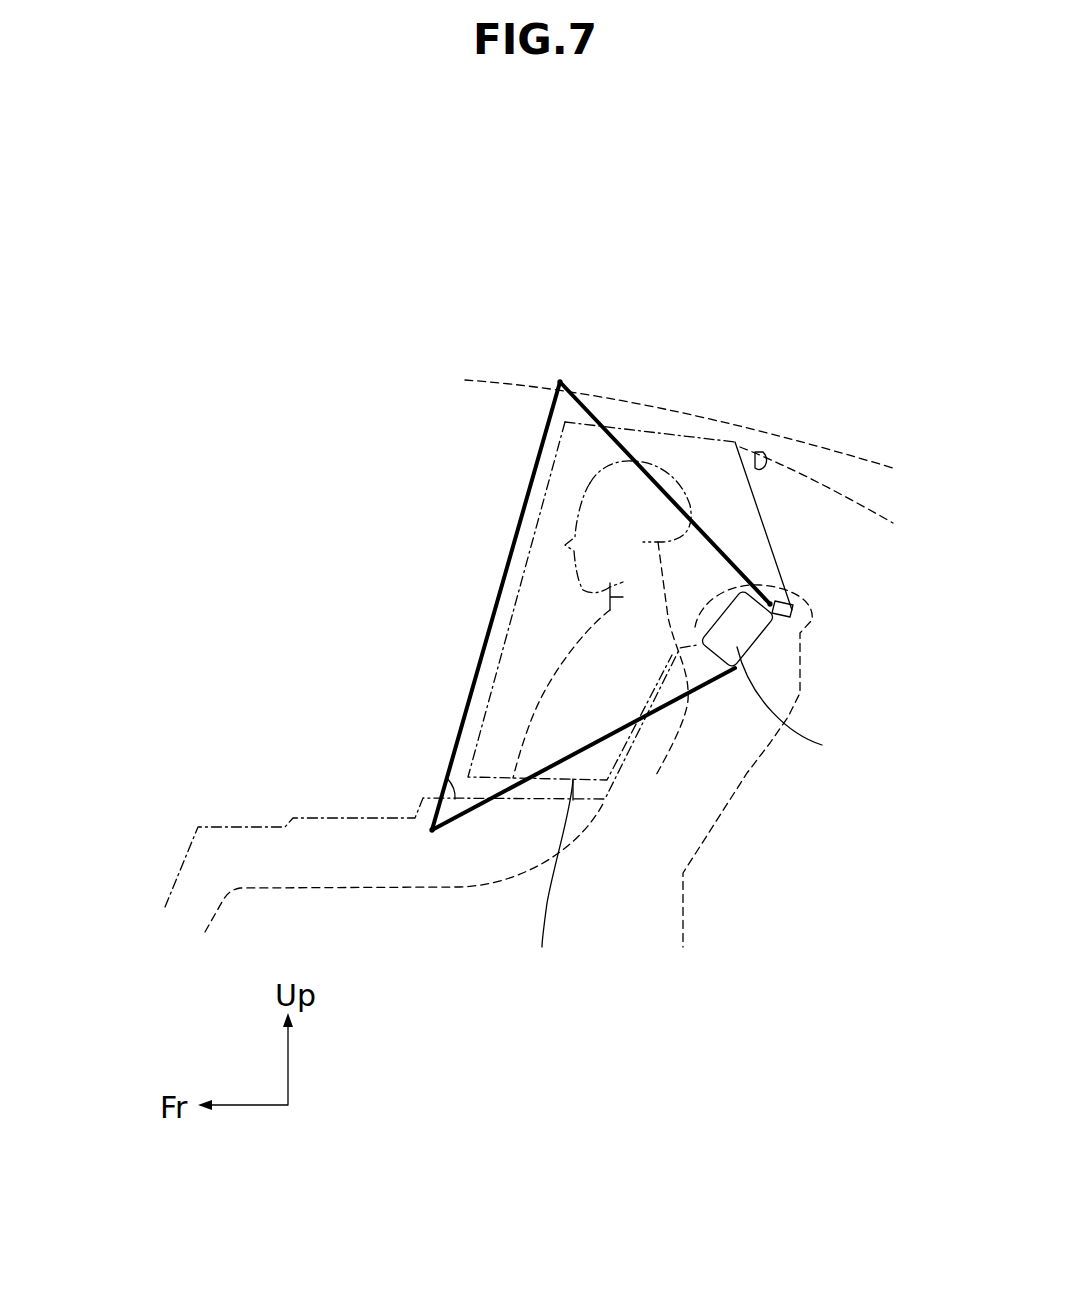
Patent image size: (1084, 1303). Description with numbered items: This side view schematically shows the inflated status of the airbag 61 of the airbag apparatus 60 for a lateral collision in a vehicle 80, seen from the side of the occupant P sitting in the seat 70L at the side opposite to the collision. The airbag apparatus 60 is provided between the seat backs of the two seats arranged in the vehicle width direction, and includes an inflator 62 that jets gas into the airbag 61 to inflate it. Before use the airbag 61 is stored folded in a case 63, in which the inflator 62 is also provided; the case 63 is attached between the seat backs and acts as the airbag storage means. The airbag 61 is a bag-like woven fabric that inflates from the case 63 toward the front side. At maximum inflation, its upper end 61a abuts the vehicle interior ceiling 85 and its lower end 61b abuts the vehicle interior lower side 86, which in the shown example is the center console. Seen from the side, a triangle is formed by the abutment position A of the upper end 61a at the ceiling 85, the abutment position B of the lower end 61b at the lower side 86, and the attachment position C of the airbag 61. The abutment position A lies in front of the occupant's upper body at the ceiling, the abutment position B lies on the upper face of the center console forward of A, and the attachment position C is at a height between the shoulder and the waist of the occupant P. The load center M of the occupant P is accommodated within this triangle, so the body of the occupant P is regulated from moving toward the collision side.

The airbag apparatus 60 is at (751, 647).
The airbag 61 is at (756, 502).
The upper end of the airbag 61a is at (630, 427).
The lower end of the airbag 61b is at (583, 827).
The inflator 62 is at (797, 705).
The case 63 is at (765, 627).
The seat 70L is at (690, 788).
The vehicle 80 is at (797, 441).
The vehicle interior ceiling 85 is at (758, 450).
The vehicle interior lower side 86 is at (452, 797).
The abutment position A is at (560, 380).
The abutment position B is at (434, 830).
The attachment position C is at (790, 600).
The load center M is at (605, 597).
The occupant P is at (660, 473).